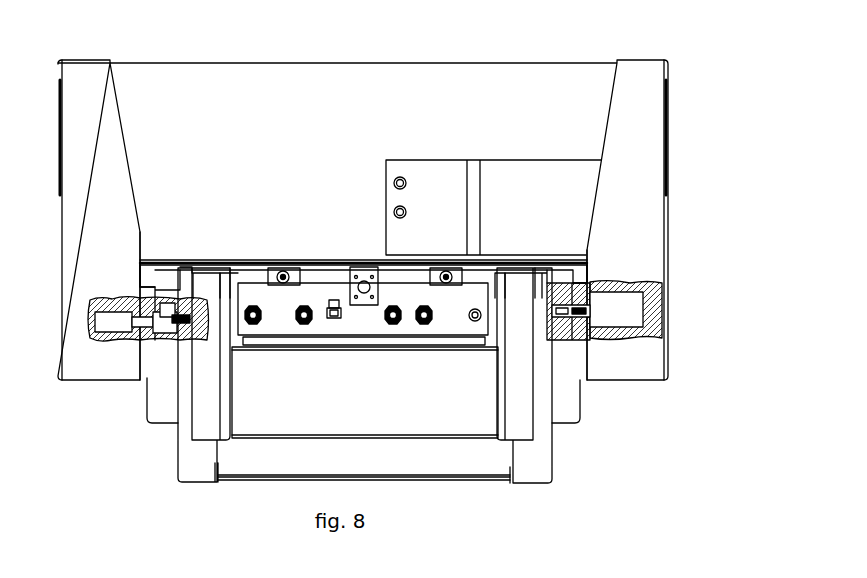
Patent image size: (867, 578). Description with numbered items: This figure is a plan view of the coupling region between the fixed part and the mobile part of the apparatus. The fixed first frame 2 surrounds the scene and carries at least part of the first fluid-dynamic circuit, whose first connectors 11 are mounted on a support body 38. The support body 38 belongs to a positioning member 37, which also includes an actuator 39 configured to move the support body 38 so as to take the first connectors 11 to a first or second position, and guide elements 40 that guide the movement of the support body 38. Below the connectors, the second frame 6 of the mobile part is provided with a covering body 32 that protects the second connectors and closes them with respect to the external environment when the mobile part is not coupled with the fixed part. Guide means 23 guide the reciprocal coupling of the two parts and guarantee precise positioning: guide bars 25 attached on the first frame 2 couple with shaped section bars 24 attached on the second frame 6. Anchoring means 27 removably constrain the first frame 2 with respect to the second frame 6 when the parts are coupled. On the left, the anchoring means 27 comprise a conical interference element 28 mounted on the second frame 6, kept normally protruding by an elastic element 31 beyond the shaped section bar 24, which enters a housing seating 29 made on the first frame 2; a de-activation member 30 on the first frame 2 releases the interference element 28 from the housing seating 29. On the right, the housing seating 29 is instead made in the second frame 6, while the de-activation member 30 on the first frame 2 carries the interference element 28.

The first frame 2 is at (667, 105).
The second frame 6 is at (532, 487).
The first connectors 11 is at (304, 323).
The guide means 23 is at (147, 430).
The shaped section bar 24 is at (168, 413).
The guide bar 25 is at (148, 283).
The anchoring means 27 is at (164, 269).
The interference element 28 is at (160, 345).
The housing seating 29 is at (157, 317).
The de-activation member 30 is at (112, 322).
The elastic element 31 is at (187, 312).
The covering body 32 is at (308, 344).
The positioning member 37 is at (409, 277).
The support body 38 is at (360, 325).
The actuator 39 is at (364, 277).
The guide elements 40 is at (284, 277).